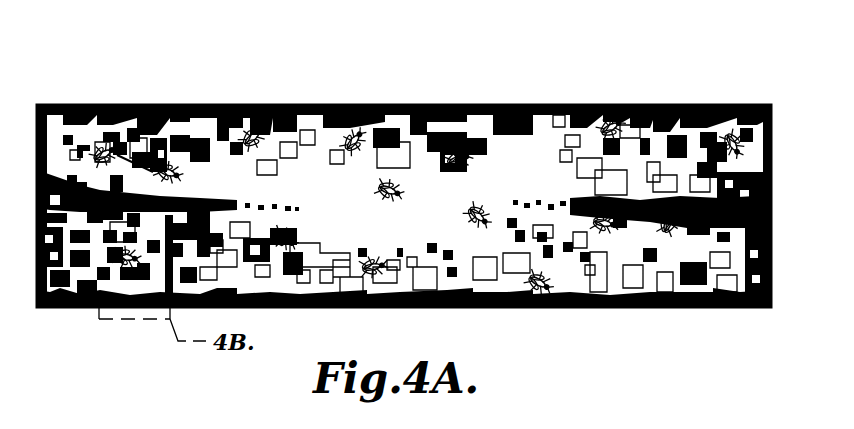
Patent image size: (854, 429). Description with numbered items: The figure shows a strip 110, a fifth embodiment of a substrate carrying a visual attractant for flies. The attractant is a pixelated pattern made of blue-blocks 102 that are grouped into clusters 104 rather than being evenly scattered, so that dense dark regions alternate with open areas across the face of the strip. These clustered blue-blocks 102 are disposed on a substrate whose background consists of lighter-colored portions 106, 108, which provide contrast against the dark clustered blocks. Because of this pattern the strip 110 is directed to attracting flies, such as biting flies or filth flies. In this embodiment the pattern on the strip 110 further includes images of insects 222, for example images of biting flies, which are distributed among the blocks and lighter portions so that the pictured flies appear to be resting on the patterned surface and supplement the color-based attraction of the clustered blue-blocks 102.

The strip 110 is at (175, 75).
The blue-blocks 102 is at (401, 106).
The lighter-colored portion 106 is at (552, 107).
The lighter-colored portion 108 is at (497, 307).
The clusters 104 is at (632, 219).
The images of insects 222 is at (356, 108).